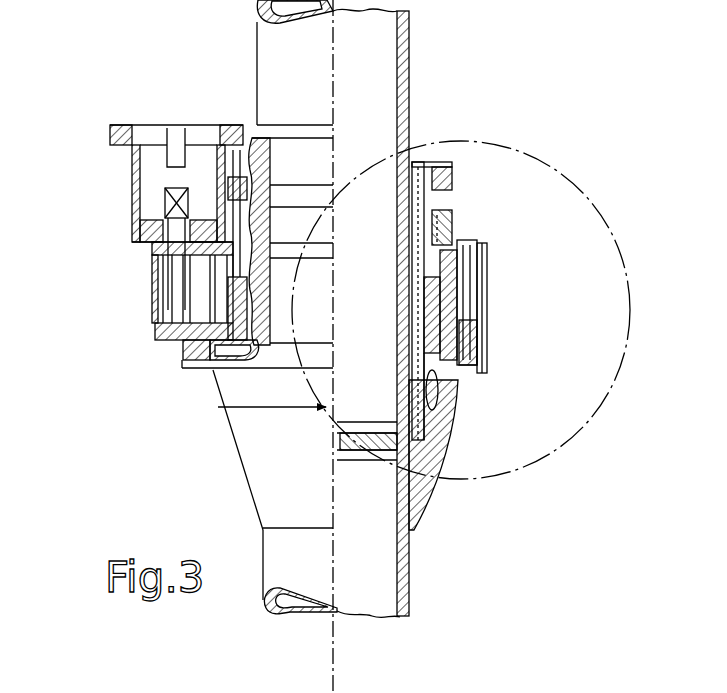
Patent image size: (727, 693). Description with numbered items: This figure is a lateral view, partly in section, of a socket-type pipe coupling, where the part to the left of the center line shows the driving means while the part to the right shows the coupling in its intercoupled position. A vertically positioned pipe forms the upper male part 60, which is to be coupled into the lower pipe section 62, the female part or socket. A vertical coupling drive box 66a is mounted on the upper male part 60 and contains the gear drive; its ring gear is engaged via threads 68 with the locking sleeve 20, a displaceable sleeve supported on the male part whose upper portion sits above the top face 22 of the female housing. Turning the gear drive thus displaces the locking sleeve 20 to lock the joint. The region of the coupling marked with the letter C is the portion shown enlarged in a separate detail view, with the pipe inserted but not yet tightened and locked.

The locking sleeve 20 is at (487, 305).
The top face 22 is at (487, 362).
The upper male part 60 is at (405, 136).
The lower pipe section 62 is at (443, 457).
The vertical coupling drive box 66a is at (145, 326).
The threads 68 is at (207, 293).
The detail region C is at (566, 170).